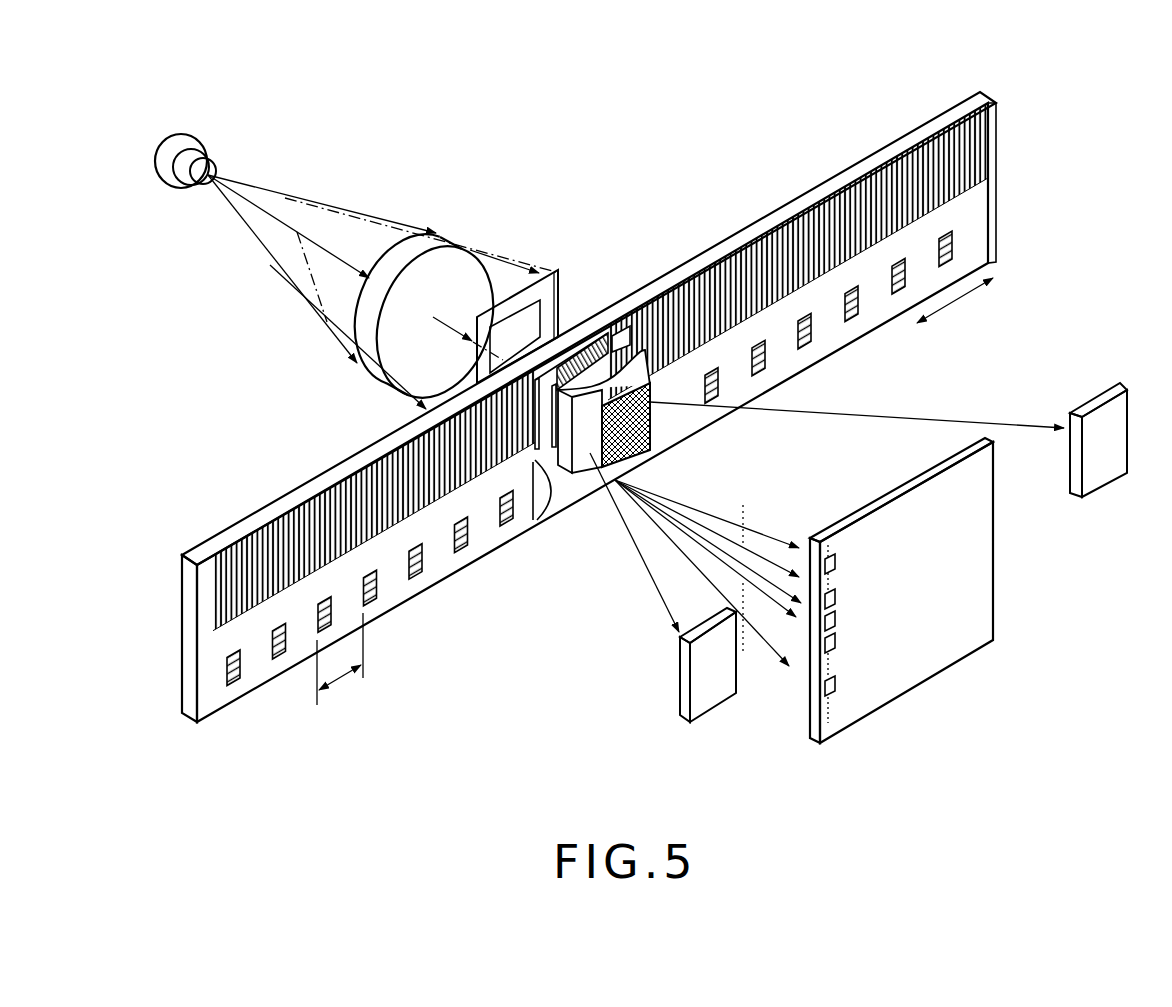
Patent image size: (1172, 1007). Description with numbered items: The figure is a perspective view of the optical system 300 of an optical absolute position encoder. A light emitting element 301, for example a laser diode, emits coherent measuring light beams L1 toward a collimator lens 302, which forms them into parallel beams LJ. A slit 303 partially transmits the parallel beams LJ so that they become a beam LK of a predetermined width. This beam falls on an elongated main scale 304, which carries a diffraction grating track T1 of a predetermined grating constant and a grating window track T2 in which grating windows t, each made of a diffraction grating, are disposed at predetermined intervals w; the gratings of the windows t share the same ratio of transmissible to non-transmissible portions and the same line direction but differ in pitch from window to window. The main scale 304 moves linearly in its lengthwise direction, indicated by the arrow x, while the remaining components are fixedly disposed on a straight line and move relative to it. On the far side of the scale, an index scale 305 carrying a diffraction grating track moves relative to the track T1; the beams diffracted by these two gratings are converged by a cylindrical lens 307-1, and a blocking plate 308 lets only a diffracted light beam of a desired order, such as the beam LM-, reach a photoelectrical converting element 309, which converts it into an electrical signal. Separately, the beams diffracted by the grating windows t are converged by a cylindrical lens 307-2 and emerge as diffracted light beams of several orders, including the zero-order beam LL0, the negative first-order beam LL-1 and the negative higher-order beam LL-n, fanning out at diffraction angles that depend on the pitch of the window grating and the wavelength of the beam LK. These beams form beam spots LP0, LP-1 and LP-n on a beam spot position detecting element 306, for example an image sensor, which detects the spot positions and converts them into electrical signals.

The optical system 300 is at (632, 388).
The light emitting element 301 is at (190, 133).
The collimator lens 302 is at (360, 370).
The slit 303 is at (557, 267).
The main scale 304 is at (181, 604).
The index scale 305 is at (598, 338).
The beam spot position detecting element 306 is at (967, 590).
The cylindrical lens 307-1 is at (624, 333).
The cylindrical lens 307-2 is at (545, 458).
The blocking plate 308 is at (652, 404).
The photoelectrical converting element 309 is at (1097, 400).
The diffraction grating track T1 is at (994, 152).
The grating window track T2 is at (978, 242).
The coherent measuring light beams L1 is at (272, 215).
The parallel beams LJ is at (447, 320).
The beam of predetermined width LK is at (506, 357).
The diffracted light beam of desired order LM- is at (632, 535).
The negative n-th order diffracted light beam LL-n is at (712, 514).
The negative first-order diffracted light beam LL-1 is at (733, 542).
The 0-order diffracted light beam LL0 is at (754, 573).
The beam spot LP-n is at (836, 558).
The beam spot LP-1 is at (836, 597).
The beam spot LP0 is at (836, 620).
The lengthwise direction arrow x is at (958, 299).
The predetermined interval w is at (340, 663).
The grating window t is at (278, 660).